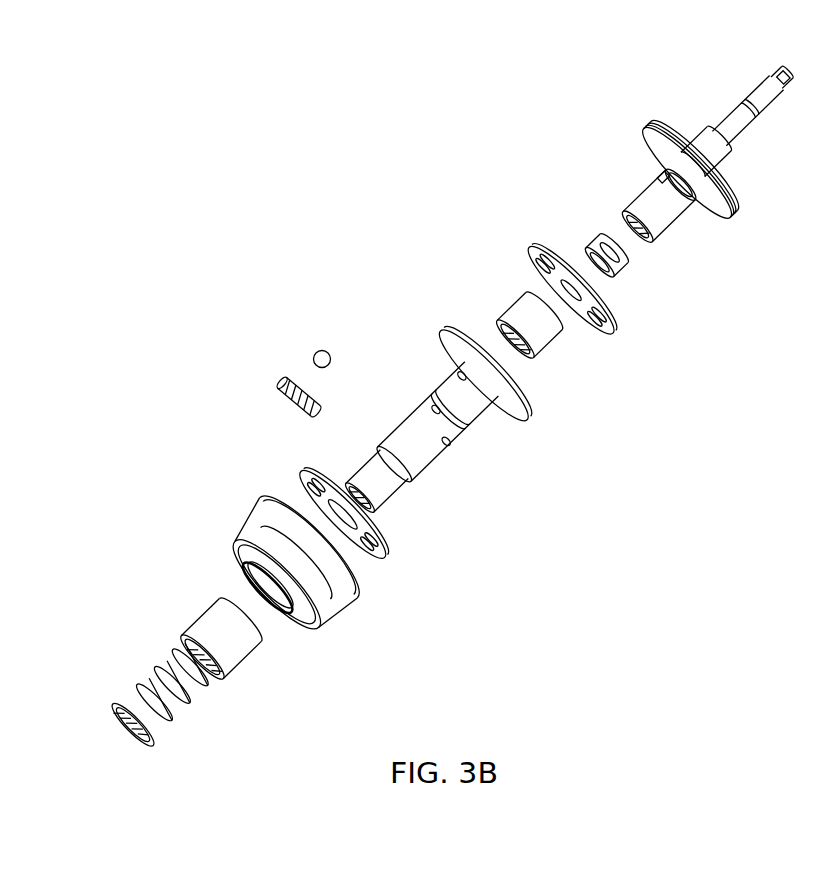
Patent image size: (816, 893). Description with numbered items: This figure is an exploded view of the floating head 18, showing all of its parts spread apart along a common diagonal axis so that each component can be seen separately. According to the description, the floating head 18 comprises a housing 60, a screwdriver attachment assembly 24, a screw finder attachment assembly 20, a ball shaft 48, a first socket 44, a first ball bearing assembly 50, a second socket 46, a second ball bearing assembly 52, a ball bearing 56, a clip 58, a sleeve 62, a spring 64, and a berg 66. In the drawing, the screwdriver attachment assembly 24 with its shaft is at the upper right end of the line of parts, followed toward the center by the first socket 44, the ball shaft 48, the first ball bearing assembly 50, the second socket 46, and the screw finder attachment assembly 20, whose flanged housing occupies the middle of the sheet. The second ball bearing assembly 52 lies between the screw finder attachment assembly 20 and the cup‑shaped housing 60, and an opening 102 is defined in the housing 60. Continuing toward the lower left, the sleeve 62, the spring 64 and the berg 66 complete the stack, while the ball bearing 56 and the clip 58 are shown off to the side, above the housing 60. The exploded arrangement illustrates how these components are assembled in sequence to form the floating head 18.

The floating head 18 is at (236, 53).
The screw finder attachment assembly 20 is at (441, 338).
The screwdriver attachment assembly 24 is at (642, 128).
The first socket 44 is at (666, 208).
The second socket 46 is at (500, 325).
The ball shaft 48 is at (586, 243).
The first ball bearing assembly 50 is at (535, 245).
The second ball bearing assembly 52 is at (387, 550).
The ball bearing 56 is at (312, 352).
The clip 58 is at (282, 383).
The housing 60 is at (233, 537).
The sleeve 62 is at (182, 630).
The spring 64 is at (140, 687).
The berg 66 is at (113, 705).
The opening 102 is at (273, 600).